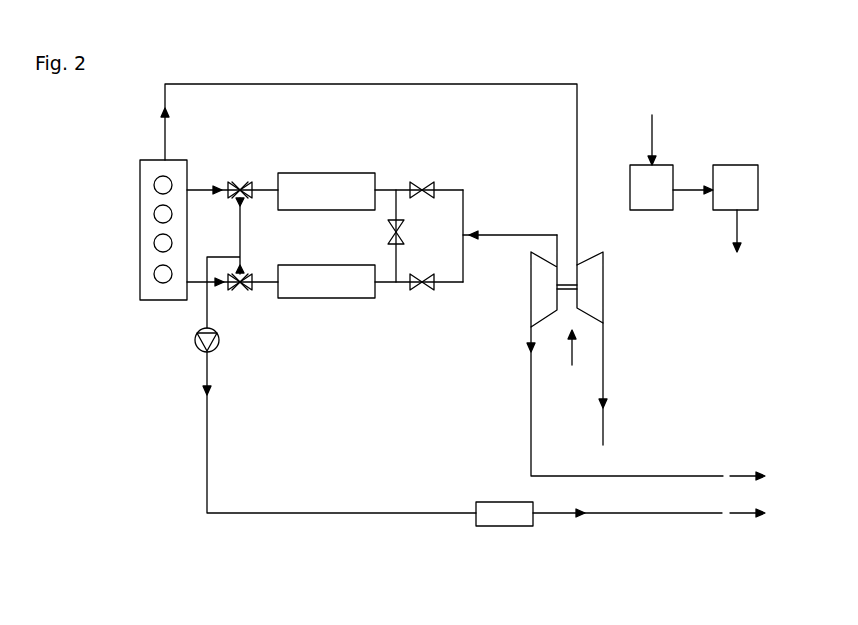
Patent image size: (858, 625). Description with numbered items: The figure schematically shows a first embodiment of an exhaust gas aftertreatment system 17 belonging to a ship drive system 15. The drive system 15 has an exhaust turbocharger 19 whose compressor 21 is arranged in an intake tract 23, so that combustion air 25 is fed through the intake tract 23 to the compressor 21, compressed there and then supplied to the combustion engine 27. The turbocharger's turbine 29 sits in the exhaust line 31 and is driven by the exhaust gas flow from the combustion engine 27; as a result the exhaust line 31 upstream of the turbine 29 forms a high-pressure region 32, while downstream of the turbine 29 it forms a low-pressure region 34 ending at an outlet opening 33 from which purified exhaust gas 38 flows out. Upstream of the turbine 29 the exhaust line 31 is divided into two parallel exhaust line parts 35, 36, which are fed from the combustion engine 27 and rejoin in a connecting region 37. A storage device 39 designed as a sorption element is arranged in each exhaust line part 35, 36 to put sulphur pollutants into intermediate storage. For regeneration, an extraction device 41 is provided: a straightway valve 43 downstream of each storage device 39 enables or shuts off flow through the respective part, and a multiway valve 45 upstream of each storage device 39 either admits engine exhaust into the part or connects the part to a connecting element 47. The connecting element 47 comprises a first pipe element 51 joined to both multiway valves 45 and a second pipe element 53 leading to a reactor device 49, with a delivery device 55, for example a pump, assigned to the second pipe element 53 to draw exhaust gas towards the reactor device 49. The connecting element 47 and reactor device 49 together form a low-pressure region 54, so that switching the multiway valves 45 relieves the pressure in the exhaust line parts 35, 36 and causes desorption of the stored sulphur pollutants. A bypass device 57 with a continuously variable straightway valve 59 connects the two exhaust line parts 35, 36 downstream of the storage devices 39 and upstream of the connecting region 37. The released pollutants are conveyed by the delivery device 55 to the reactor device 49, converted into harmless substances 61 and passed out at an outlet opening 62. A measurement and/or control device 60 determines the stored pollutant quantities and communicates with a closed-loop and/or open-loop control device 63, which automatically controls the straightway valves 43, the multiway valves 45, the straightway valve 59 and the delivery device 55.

The drive system 15 is at (768, 112).
The exhaust gas aftertreatment system 17 is at (364, 381).
The exhaust turbocharger 19 is at (572, 361).
The compressor 21 is at (597, 296).
The intake tract 23 is at (545, 83).
The combustion air 25 is at (604, 431).
The combustion engine 27 is at (143, 197).
The turbine 29 is at (540, 298).
The exhaust line 31 is at (457, 190).
The high-pressure region 32 is at (500, 128).
The outlet opening 33 is at (726, 464).
The low-pressure region 34 is at (482, 475).
The exhaust line part 35 is at (341, 166).
The exhaust line part 36 is at (306, 307).
The connecting region 37 is at (496, 190).
The purified exhaust gas 38 is at (755, 468).
The storage device 39 is at (360, 184).
The extraction device 41 is at (165, 390).
The straightway valve 43 is at (421, 182).
The multiway valve 45 is at (241, 181).
The connecting element 47 is at (172, 536).
The reactor device 49 is at (501, 527).
The first pipe element 51 is at (240, 225).
The second pipe element 53 is at (206, 476).
The low-pressure region 54 is at (555, 557).
The delivery device 55 is at (195, 340).
The bypass device 57 is at (397, 210).
The straightway valve 59 is at (388, 233).
The measurement and/or control device 60 is at (655, 213).
The harmless substances 61 is at (746, 518).
The outlet opening 62 is at (711, 528).
The closed-loop and/or open-loop control device 63 is at (748, 191).